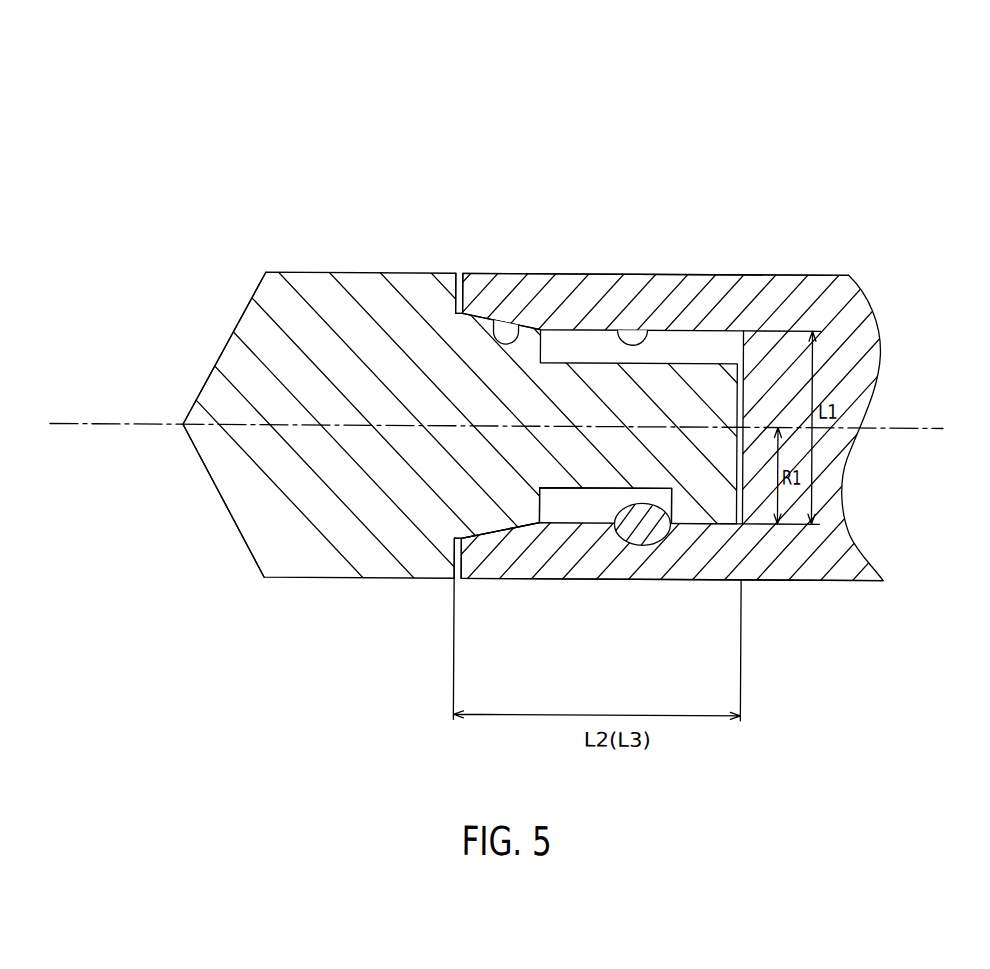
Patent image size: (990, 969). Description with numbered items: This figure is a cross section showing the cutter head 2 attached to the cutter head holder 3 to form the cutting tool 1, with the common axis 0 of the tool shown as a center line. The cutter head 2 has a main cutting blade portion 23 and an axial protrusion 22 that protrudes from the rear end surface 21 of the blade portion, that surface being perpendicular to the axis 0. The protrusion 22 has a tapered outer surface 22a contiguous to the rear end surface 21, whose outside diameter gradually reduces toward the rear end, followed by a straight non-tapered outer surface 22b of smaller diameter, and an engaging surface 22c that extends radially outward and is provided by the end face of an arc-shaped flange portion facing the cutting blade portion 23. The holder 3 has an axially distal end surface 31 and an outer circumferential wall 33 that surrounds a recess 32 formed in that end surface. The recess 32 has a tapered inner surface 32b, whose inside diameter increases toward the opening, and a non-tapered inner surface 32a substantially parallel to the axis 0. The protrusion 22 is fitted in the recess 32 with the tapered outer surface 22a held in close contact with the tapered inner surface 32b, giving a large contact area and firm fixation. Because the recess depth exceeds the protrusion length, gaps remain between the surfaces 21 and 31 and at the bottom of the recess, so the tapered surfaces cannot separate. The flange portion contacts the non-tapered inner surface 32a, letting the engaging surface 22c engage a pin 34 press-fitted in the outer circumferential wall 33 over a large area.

The cutting tool 1 is at (526, 353).
The cutter head 2 is at (146, 275).
The cutter head holder 3 is at (770, 214).
The rear end surface 21 is at (463, 295).
The axial protrusion 22 is at (573, 588).
The tapered outer surface 22a is at (503, 531).
The non-tapered outer surface 22b is at (577, 481).
The engaging surface 22c is at (658, 568).
The cutting blade portion 23 is at (300, 271).
The axially distal end surface 31 is at (458, 286).
The recess 32 is at (570, 256).
The non-tapered inner surface 32a is at (629, 277).
The tapered inner surface 32b is at (519, 322).
The outer circumferential wall 33 is at (709, 280).
The pin 34 is at (640, 524).
The axis 0 is at (912, 423).